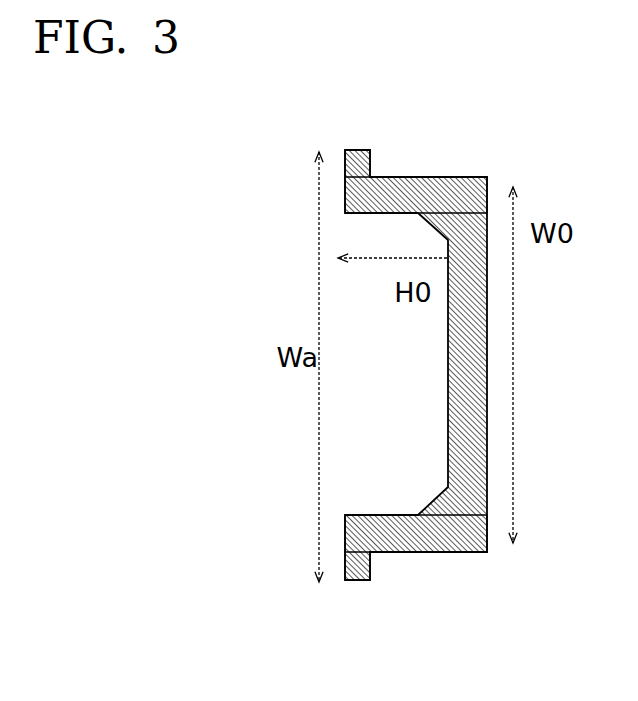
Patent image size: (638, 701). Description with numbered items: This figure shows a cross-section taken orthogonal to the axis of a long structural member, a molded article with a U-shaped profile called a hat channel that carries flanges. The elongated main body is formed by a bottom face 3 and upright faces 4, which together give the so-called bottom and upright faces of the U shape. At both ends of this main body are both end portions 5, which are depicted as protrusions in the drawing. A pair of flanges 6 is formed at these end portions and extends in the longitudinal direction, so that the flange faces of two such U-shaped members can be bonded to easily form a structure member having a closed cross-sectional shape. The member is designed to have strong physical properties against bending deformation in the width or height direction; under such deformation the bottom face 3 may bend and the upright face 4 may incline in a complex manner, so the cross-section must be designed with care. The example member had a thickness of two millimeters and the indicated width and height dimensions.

The bottom face 3 is at (501, 360).
The upright face 4 is at (461, 166).
The both end portions of elongated main body 5 is at (383, 149).
The pair of flanges 6 is at (334, 187).